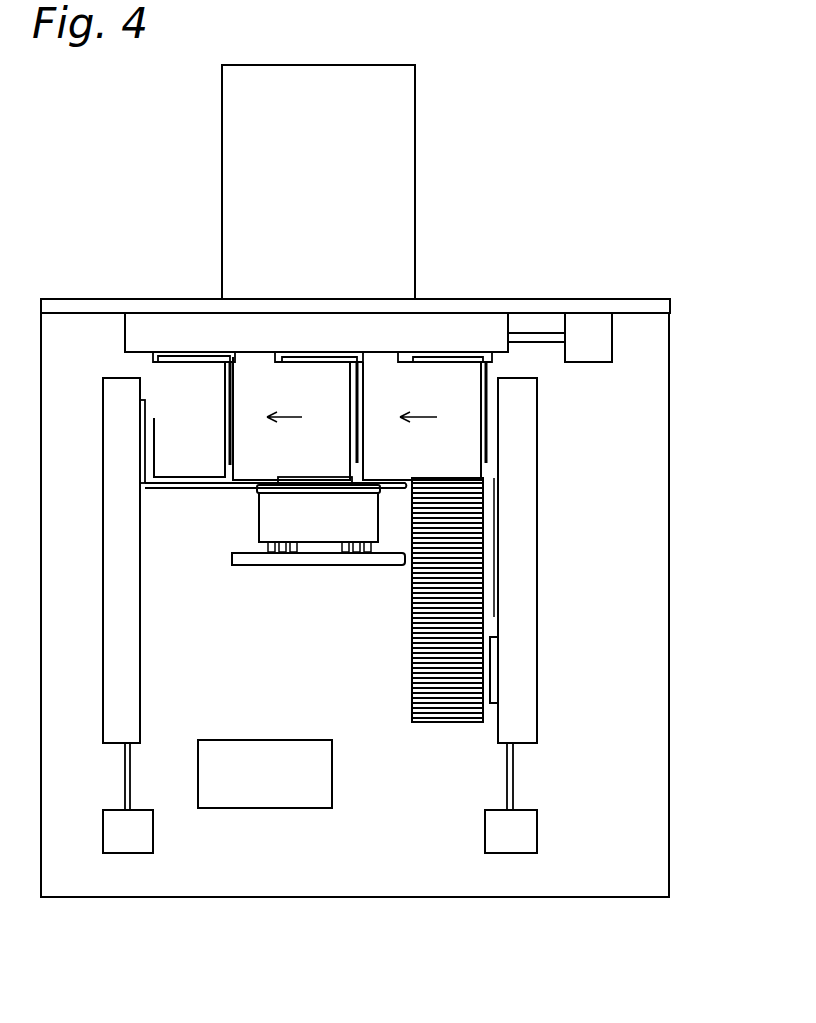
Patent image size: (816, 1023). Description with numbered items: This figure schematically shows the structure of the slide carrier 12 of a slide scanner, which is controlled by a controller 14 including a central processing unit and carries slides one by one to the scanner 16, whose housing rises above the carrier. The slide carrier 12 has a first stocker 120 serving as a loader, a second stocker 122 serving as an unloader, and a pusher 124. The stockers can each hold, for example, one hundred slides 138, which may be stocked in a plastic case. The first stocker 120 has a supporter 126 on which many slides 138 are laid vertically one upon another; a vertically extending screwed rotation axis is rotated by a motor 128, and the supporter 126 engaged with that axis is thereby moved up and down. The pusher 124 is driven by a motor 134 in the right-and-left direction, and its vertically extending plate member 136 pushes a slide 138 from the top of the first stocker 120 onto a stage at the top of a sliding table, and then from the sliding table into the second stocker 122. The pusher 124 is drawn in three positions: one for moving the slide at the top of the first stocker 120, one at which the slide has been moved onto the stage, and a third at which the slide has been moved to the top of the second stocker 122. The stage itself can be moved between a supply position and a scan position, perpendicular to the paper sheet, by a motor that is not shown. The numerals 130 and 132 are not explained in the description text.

The slide carrier 12 is at (603, 264).
The controller 14 is at (268, 740).
The scanner 16 is at (442, 160).
The first stocker 120 is at (407, 732).
The second stocker 122 is at (203, 572).
The pusher 124 is at (452, 383).
The supporter 126 is at (450, 723).
The motor 128 is at (537, 835).
The mounting plate 130 is at (203, 488).
The drive unit 132 is at (153, 827).
The motor 134 is at (587, 362).
The plate member 136 is at (483, 407).
The slide 138 is at (184, 477).